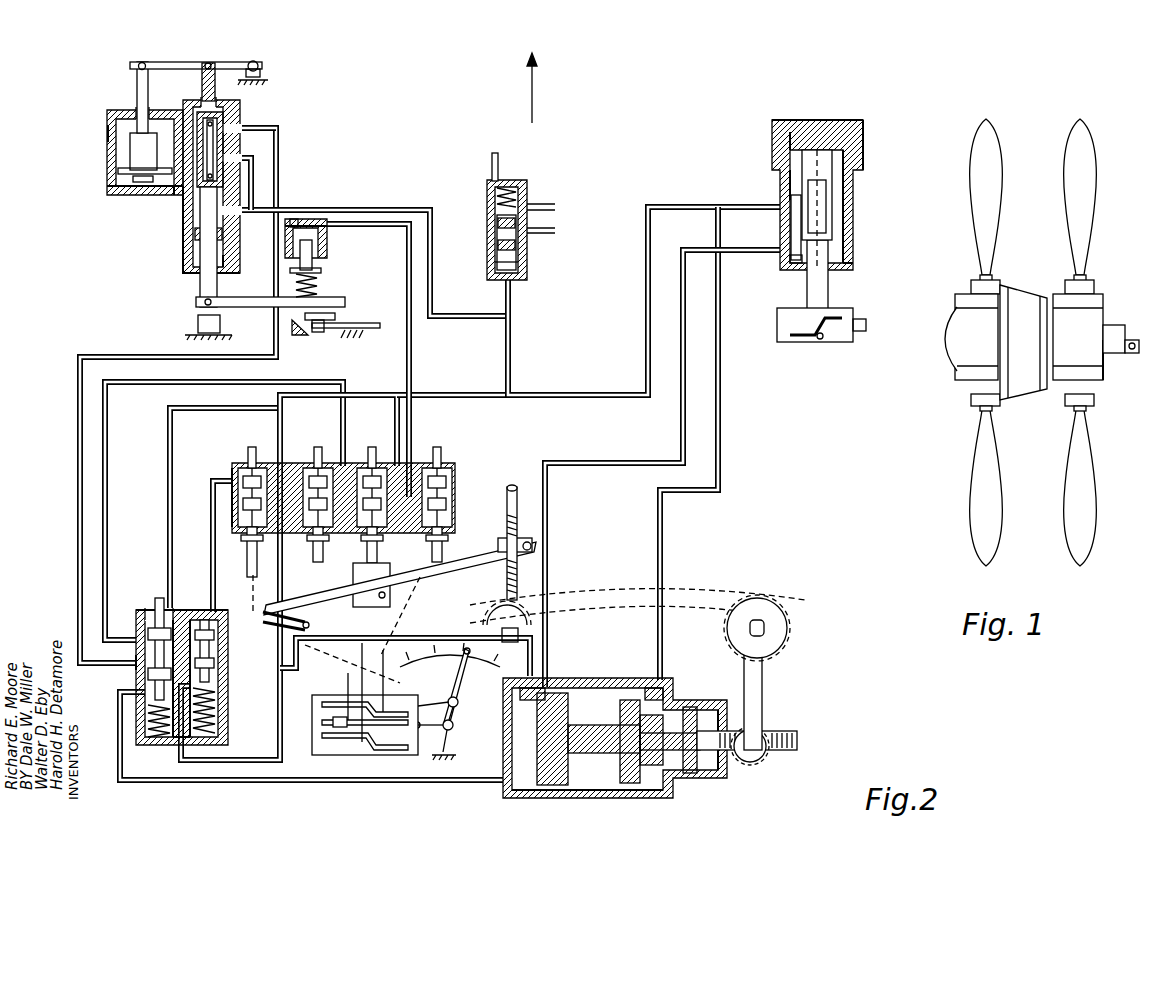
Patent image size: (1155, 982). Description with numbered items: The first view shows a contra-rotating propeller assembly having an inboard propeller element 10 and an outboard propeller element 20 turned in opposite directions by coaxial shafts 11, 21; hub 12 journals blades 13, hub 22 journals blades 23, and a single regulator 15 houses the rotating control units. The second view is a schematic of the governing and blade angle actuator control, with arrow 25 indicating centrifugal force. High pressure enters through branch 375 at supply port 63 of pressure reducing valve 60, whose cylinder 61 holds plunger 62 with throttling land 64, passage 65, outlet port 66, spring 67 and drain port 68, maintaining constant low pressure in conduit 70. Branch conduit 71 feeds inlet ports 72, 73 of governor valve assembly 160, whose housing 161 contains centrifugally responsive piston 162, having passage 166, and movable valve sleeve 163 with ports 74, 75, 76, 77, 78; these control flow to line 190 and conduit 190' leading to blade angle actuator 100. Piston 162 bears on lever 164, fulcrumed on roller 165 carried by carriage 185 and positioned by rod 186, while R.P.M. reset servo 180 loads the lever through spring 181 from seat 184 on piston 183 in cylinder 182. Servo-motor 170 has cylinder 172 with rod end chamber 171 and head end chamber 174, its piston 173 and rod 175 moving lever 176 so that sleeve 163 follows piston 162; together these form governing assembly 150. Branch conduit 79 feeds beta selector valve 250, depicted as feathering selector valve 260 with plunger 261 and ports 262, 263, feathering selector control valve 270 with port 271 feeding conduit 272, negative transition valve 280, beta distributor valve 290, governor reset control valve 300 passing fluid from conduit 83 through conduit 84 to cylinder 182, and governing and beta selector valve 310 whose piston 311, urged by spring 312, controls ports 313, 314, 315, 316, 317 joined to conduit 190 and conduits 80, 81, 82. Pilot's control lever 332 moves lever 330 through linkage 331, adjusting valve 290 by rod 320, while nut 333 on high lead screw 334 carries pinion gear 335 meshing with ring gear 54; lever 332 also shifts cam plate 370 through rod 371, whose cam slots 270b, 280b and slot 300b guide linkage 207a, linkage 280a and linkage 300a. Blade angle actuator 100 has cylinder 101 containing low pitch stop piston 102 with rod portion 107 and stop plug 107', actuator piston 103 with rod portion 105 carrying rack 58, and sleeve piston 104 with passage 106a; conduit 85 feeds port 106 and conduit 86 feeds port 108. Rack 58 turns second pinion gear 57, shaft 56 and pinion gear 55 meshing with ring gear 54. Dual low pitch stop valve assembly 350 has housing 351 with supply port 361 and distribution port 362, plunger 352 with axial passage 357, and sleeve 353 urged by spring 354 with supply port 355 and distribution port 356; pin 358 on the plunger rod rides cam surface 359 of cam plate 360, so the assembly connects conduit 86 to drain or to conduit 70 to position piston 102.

In FIG. 1, the inboard propeller element 10 is at (1058, 296).
In FIG. 1, the coaxial shaft 11 is at (1112, 325).
In FIG. 1, the hub 12 is at (1090, 380).
In FIG. 1, the propeller blades 13 is at (1090, 128).
In FIG. 1, the regulator 15 is at (1025, 400).
In FIG. 1, the outboard propeller element 20 is at (960, 300).
In FIG. 1, the shaft 21 is at (1130, 353).
In FIG. 1, the hub 22 is at (956, 380).
In FIG. 1, the blades 23 is at (990, 193).
In FIG. 2, the arrow 25 is at (526, 95).
In FIG. 2, the ring gear 54 is at (735, 602).
In FIG. 2, the pinion gear 55 is at (790, 628).
In FIG. 2, the shaft 56 is at (760, 688).
In FIG. 2, the second pinion gear 57 is at (762, 760).
In FIG. 2, the rack 58 is at (798, 740).
In FIG. 2, the pressure reducing valve 60 is at (490, 180).
In FIG. 2, the cylinder 61 is at (494, 193).
In FIG. 2, the spring loaded plunger 62 is at (496, 236).
In FIG. 2, the pressure supply port 63 is at (522, 234).
In FIG. 2, the throttling land 64 is at (524, 250).
In FIG. 2, the passage 65 is at (493, 268).
In FIG. 2, the outlet port 66 is at (514, 282).
In FIG. 2, the spring 67 is at (500, 168).
In FIG. 2, the drain port 68 is at (532, 206).
In FIG. 2, the conduit 70 is at (506, 366).
In FIG. 2, the branch conduit 71 is at (404, 210).
In FIG. 2, the inlet port 72 is at (252, 165).
In FIG. 2, the inlet port 73 is at (246, 212).
In FIG. 2, the port 74 is at (175, 197).
In FIG. 2, the port 75 is at (250, 130).
In FIG. 2, the port 76 is at (232, 238).
In FIG. 2, the port 77 is at (240, 270).
In FIG. 2, the port 78 is at (253, 80).
In FIG. 2, the branch conduit 79 is at (463, 396).
In FIG. 2, the conduit 80 is at (168, 440).
In FIG. 2, the conduit 81 is at (106, 455).
In FIG. 2, the conduit 82 is at (118, 745).
In FIG. 2, the conduit 83 is at (396, 418).
In FIG. 2, the conduit 84 is at (414, 420).
In FIG. 2, the conduit 85 is at (720, 436).
In FIG. 2, the conduit 86 is at (646, 460).
In FIG. 2, the blade angle actuator 100 is at (512, 792).
In FIG. 2, the cylinder 101 is at (576, 798).
In FIG. 2, the low pitch stop piston 102 is at (540, 742).
In FIG. 2, the actuator piston 103 is at (693, 775).
In FIG. 2, the sleeve piston 104 is at (628, 798).
In FIG. 2, the rod portion 105 is at (768, 732).
In FIG. 2, the port 106 is at (660, 700).
In FIG. 2, the passage 106a is at (652, 690).
In FIG. 2, the rod portion 107 is at (615, 713).
In FIG. 2, the stop plug 107' is at (688, 717).
In FIG. 2, the port 108 is at (546, 686).
In FIG. 2, the governing assembly 150 is at (107, 190).
In FIG. 2, the governor valve assembly 160 is at (185, 240).
In FIG. 2, the housing or valve guide 161 is at (244, 150).
In FIG. 2, the centrifugally responsive piston element 162 is at (205, 265).
In FIG. 2, the movable valve sleeve 163 is at (302, 121).
In FIG. 2, the lever 164 is at (258, 308).
In FIG. 2, the roller 165 is at (336, 316).
In FIG. 2, the passage 166 is at (195, 106).
In FIG. 2, the servo-motor 170 is at (107, 118).
In FIG. 2, the rod end chamber 171 is at (128, 150).
In FIG. 2, the cylinder 172 is at (106, 131).
In FIG. 2, the piston 173 is at (128, 171).
In FIG. 2, the head end chamber 174 is at (124, 184).
In FIG. 2, the rod 175 is at (136, 82).
In FIG. 2, the lever 176 is at (132, 64).
In FIG. 2, the R.P.M. reset servo 180 is at (387, 252).
In FIG. 2, the spring 181 is at (318, 288).
In FIG. 2, the cylinder 182 is at (322, 224).
In FIG. 2, the piston 183 is at (294, 224).
In FIG. 2, the seat 184 is at (321, 270).
In FIG. 2, the carriage 185 is at (316, 333).
In FIG. 2, the rod 186 is at (378, 328).
In FIG. 2, the line 190 is at (145, 395).
In FIG. 2, the conduit 190' is at (405, 648).
In FIG. 2, the link 207a is at (310, 648).
In FIG. 2, the beta selector valve 250 is at (150, 605).
In FIG. 2, the feathering selector valve 260 is at (271, 734).
In FIG. 2, the spring loaded plunger 261 is at (218, 640).
In FIG. 2, the port 262 is at (220, 670).
In FIG. 2, the port 263 is at (220, 655).
In FIG. 2, the feathering selector control valve 270 is at (252, 462).
In FIG. 2, the cam slot 270b is at (318, 738).
In FIG. 2, the port 271 is at (236, 476).
In FIG. 2, the conduit 272 is at (232, 485).
In FIG. 2, the negative transition valve 280 is at (320, 462).
In FIG. 2, the linkage 280a is at (360, 775).
In FIG. 2, the cam slot 280b is at (338, 752).
In FIG. 2, the beta distributor valve 290 is at (389, 441).
In FIG. 2, the governor reset control valve 300 is at (489, 449).
In FIG. 2, the linkage 300a is at (396, 700).
In FIG. 2, the slot 300b is at (451, 722).
In FIG. 2, the governing and beta selector valve 310 is at (136, 670).
In FIG. 2, the piston 311 is at (152, 610).
In FIG. 2, the spring 312 is at (178, 745).
In FIG. 2, the port 313 is at (136, 663).
In FIG. 2, the port 314 is at (176, 610).
In FIG. 2, the port 315 is at (150, 628).
In FIG. 2, the port 316 is at (150, 738).
In FIG. 2, the port 317 is at (191, 628).
In FIG. 2, the rod 320 is at (365, 568).
In FIG. 2, the lever 330 is at (463, 572).
In FIG. 2, the linkage 331 is at (308, 622).
In FIG. 2, the pilot's control lever 332 is at (462, 700).
In FIG. 2, the nut 333 is at (500, 540).
In FIG. 2, the high lead screw 334 is at (508, 488).
In FIG. 2, the pinion gear 335 is at (532, 605).
In FIG. 2, the dual low pitch stop valve assembly 350 is at (778, 120).
In FIG. 2, the valve housing 351 is at (860, 120).
In FIG. 2, the movable piston or plunger 352 is at (830, 210).
In FIG. 2, the movable sleeve 353 is at (843, 185).
In FIG. 2, the spring 354 is at (860, 134).
In FIG. 2, the supply port 355 is at (791, 200).
In FIG. 2, the distribution port 356 is at (790, 150).
In FIG. 2, the axial passage 357 is at (845, 258).
In FIG. 2, the pin 358 is at (820, 340).
In FIG. 2, the cam surface 359 is at (835, 318).
In FIG. 2, the cam plate 360 is at (780, 328).
In FIG. 2, the supply port 361 is at (790, 220).
In FIG. 2, the distribution port 362 is at (790, 265).
In FIG. 2, the cam plate 370 is at (372, 756).
In FIG. 2, the rod 371 is at (453, 728).
In FIG. 2, the branch 375 is at (540, 230).